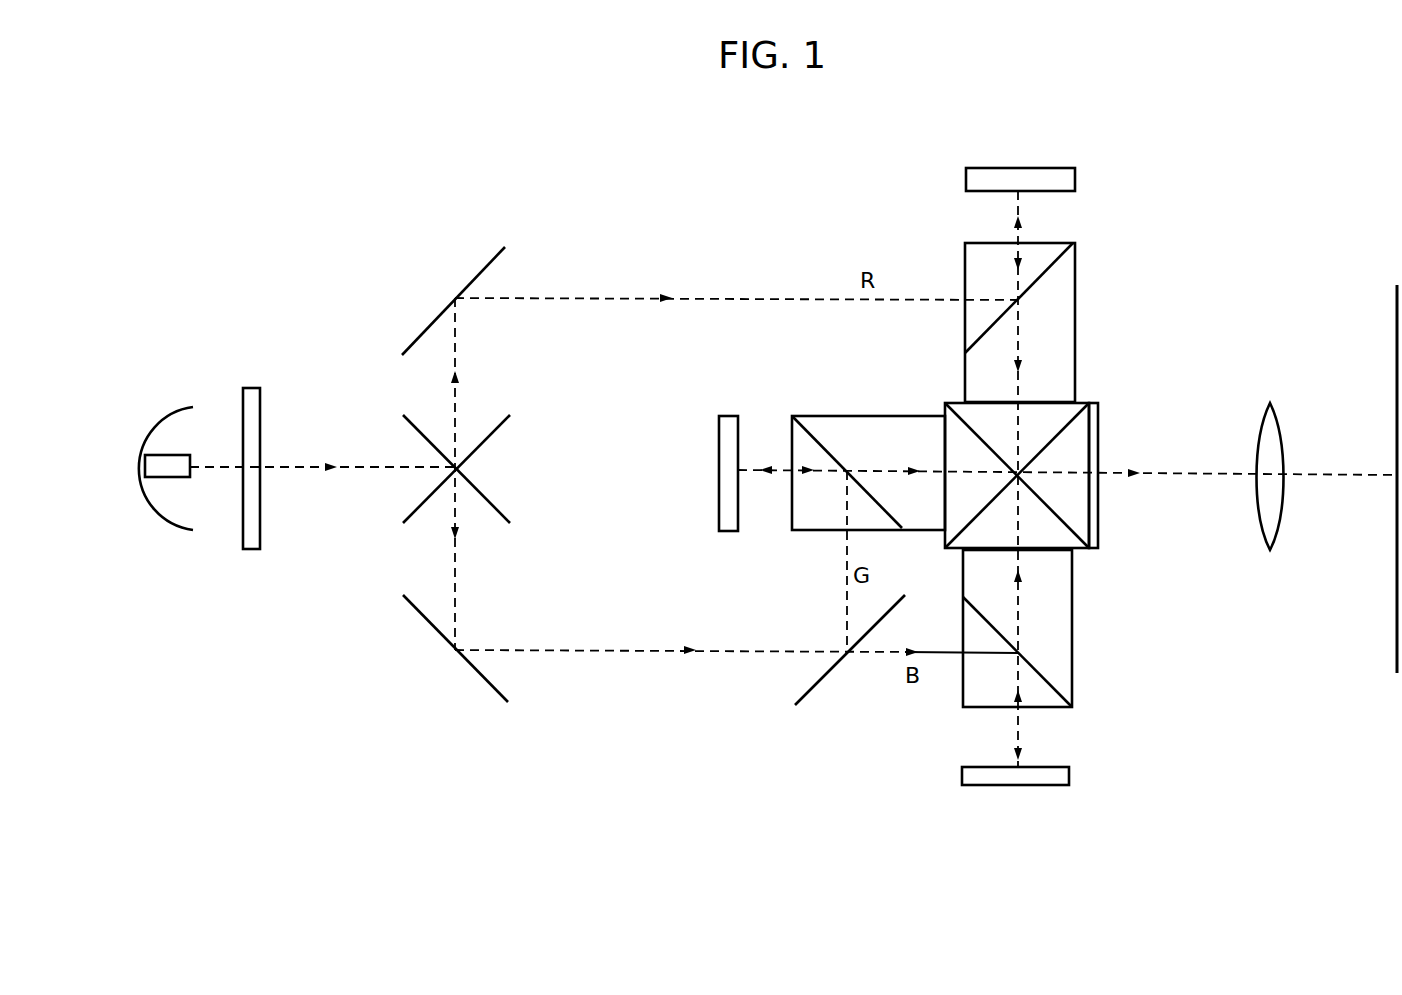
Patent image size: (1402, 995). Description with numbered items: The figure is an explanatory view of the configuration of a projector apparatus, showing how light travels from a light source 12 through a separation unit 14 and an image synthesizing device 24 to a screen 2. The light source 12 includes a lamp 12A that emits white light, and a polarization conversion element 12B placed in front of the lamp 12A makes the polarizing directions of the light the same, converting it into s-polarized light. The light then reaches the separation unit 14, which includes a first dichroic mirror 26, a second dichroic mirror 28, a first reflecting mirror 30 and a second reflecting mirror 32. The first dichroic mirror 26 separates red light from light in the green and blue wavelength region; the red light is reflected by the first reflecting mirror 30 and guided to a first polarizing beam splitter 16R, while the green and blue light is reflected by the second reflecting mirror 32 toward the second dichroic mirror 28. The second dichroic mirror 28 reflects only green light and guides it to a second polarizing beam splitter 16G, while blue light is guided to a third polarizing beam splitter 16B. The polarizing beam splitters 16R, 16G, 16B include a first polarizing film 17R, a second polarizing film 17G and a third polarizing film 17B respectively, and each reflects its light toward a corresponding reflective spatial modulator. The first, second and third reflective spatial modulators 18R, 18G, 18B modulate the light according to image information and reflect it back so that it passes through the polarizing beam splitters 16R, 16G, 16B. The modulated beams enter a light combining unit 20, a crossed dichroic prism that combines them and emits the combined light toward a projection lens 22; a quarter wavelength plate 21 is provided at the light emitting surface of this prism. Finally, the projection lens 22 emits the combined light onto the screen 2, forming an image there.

The screen 2 is at (1395, 630).
The light source 12 is at (252, 340).
The lamp 12A is at (177, 412).
The polarization conversion element 12B is at (252, 389).
The separation unit 14 is at (445, 255).
The first polarizing beam splitter 16R is at (1075, 278).
The second polarizing beam splitter 16G is at (860, 416).
The third polarizing beam splitter 16B is at (1072, 618).
The first polarizing film 17R is at (1043, 273).
The second polarizing film 17G is at (826, 449).
The third polarizing film 17B is at (1045, 680).
The first reflective spatial modulator 18R is at (1075, 178).
The second reflective spatial modulator 18G is at (730, 416).
The third reflective spatial modulator 18B is at (1069, 776).
The light combining unit 20 is at (1068, 400).
The quarter wavelength plate 21 is at (1098, 508).
The projection lens 22 is at (1280, 427).
The image synthesizing device 24 is at (1146, 128).
The first dichroic mirror 26 is at (510, 415).
The second dichroic mirror 28 is at (798, 700).
The first reflecting mirror 30 is at (505, 247).
The second reflecting mirror 32 is at (508, 702).